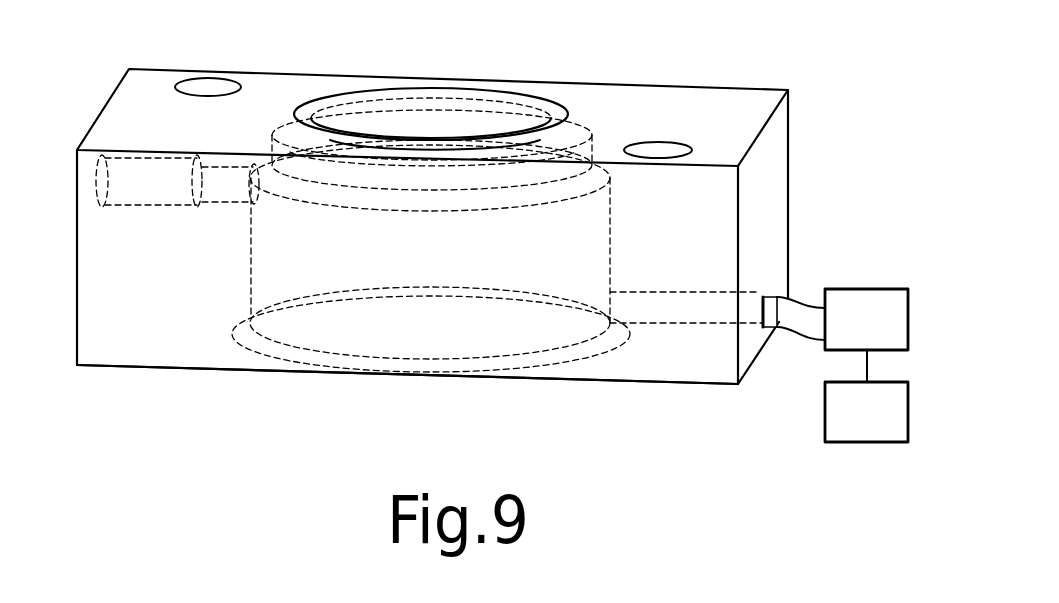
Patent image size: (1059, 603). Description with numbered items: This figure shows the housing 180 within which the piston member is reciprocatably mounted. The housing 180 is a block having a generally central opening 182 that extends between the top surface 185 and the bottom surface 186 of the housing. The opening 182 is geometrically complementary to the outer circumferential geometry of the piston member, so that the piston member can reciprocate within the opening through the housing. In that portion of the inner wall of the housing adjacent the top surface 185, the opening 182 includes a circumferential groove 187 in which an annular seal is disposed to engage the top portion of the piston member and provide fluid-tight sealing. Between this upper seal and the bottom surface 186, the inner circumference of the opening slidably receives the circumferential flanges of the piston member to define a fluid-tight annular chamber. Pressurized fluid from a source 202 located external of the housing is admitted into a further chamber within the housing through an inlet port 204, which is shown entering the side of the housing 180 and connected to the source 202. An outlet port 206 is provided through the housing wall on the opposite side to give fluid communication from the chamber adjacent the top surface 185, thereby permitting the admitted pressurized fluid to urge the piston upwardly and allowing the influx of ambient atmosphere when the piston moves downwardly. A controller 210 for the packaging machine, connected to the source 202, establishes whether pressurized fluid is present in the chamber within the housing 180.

The housing 180 is at (665, 73).
The central opening 182 is at (471, 118).
The top surface 185 is at (567, 92).
The bottom surface 186 is at (642, 385).
The circumferential groove 187 is at (270, 158).
The source of pressurized fluid 202 is at (875, 289).
The inlet port 204 is at (748, 300).
The outlet port 206 is at (118, 157).
The controller 210 is at (840, 442).